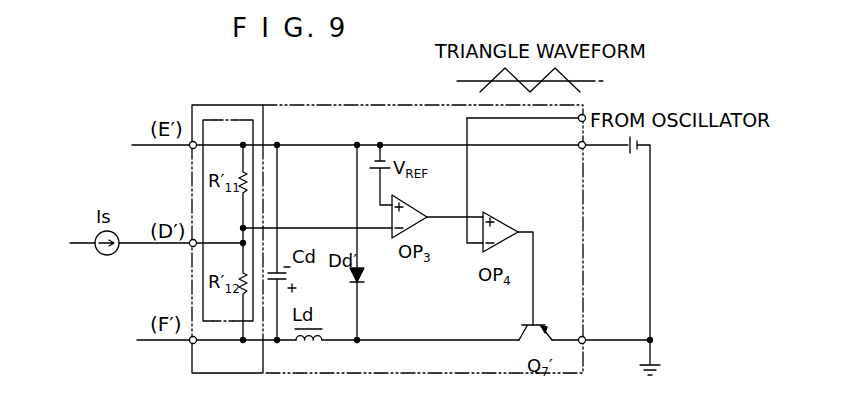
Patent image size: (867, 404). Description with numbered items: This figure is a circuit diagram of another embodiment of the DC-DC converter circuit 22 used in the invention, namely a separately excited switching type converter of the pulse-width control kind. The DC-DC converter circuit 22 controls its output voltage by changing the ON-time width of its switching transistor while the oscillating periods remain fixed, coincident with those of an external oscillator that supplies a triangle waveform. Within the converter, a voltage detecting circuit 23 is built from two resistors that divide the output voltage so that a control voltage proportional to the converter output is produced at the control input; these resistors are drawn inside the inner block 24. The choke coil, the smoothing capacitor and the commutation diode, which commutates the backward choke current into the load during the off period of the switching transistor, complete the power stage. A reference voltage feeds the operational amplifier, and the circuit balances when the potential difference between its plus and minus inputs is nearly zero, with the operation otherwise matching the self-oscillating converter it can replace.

The DC-DC converter circuit 22 is at (350, 104).
The voltage detecting circuit 23 is at (213, 104).
The resistor network block 24 is at (243, 120).